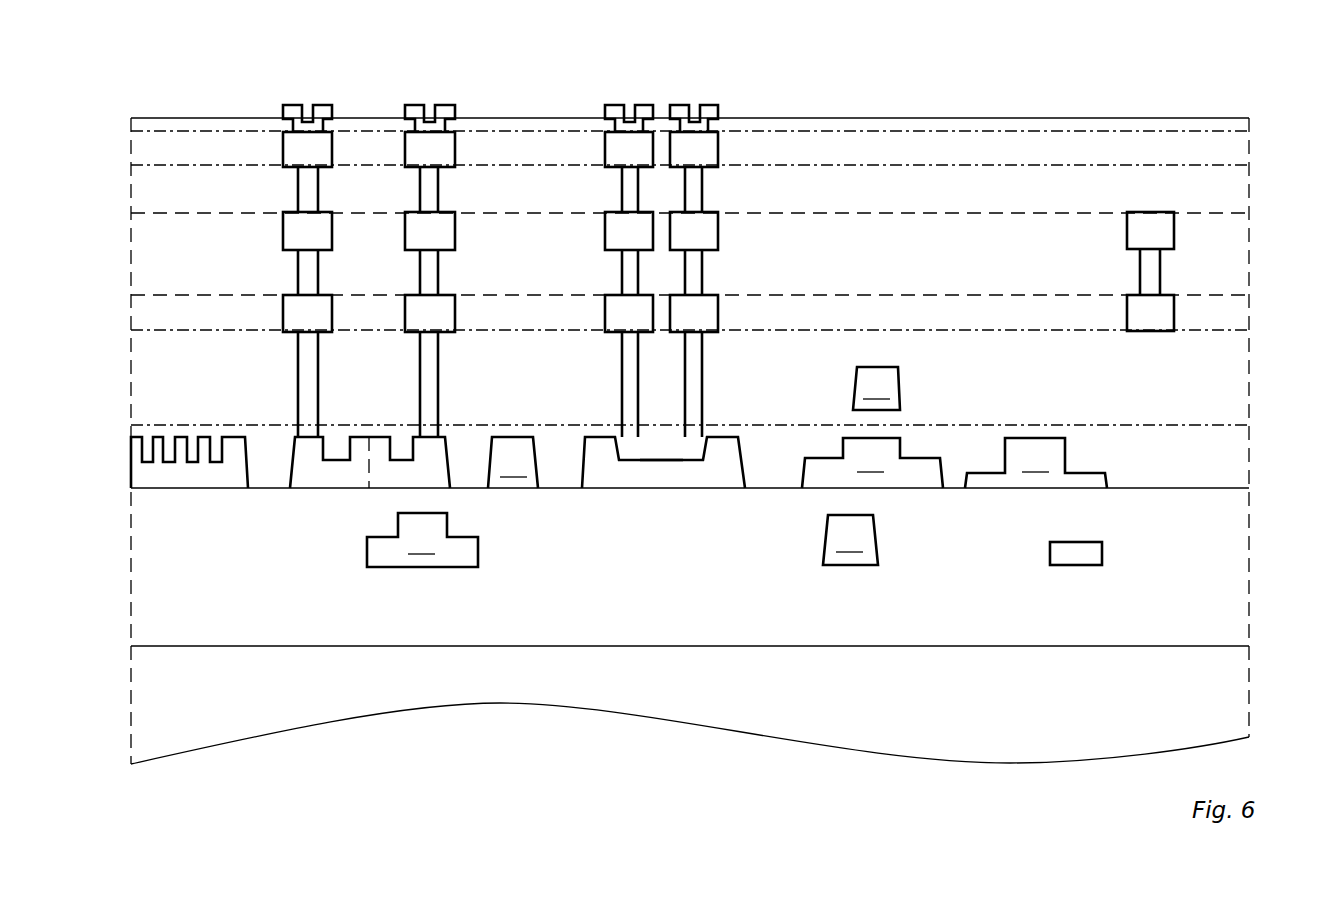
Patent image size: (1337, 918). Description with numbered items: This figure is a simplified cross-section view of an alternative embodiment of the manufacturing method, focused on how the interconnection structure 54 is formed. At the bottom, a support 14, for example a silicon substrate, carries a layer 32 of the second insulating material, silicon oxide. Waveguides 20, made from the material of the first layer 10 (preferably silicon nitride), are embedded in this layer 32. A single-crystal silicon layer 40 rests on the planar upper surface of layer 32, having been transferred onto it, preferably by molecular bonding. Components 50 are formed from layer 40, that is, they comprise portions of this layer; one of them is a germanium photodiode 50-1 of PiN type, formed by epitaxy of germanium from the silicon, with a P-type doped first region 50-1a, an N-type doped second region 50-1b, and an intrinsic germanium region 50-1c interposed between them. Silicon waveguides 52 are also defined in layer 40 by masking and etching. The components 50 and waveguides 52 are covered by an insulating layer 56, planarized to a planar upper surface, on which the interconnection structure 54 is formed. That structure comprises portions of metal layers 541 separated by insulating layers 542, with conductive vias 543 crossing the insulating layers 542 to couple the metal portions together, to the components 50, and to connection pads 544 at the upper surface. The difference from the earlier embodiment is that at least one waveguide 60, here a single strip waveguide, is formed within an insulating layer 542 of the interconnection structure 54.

The layer 10 is at (366, 553).
The support 14 is at (1230, 690).
The waveguide 20 is at (1083, 557).
The layer 32 is at (1230, 562).
The single-crystal silicon layer 40 is at (125, 465).
The components 50 is at (190, 472).
The germanium photodiode 50-1 is at (639, 501).
The first region 50-1a is at (628, 462).
The second region 50-1b is at (695, 462).
The intrinsic germanium region 50-1c is at (658, 462).
The silicon waveguides 52 is at (797, 462).
The interconnection structure 54 is at (1262, 118).
The metal layers 541 is at (300, 149).
The insulating layers 542 is at (150, 125).
The conductive vias 543 is at (310, 188).
The connection pads 544 is at (313, 106).
The insulating layer 56 is at (1230, 457).
The waveguide 60 is at (876, 388).